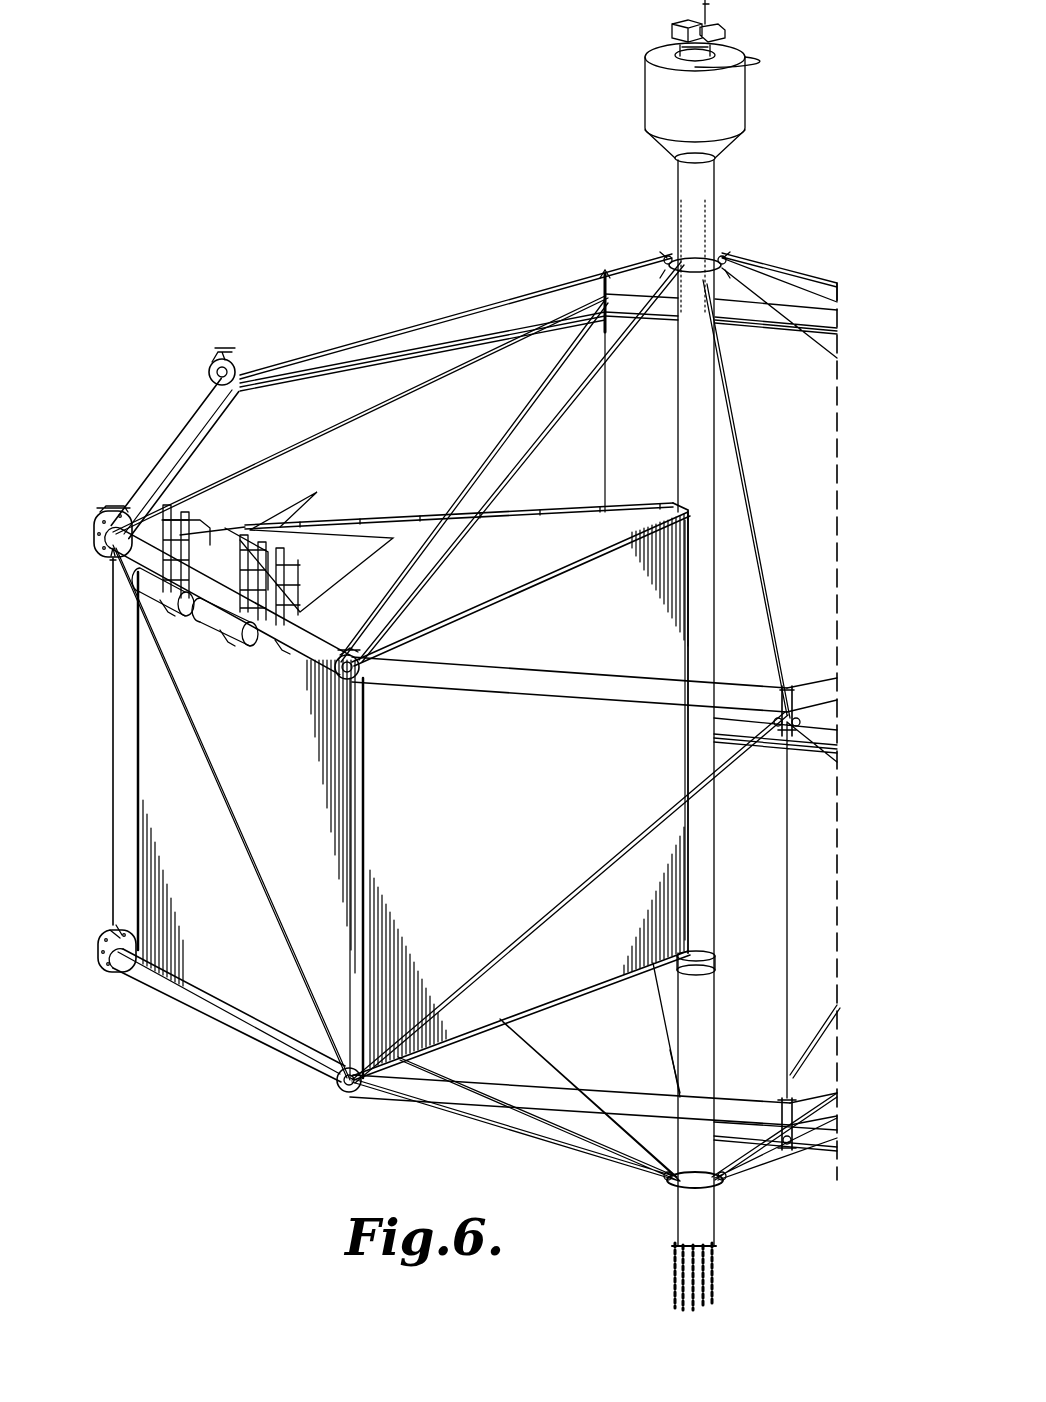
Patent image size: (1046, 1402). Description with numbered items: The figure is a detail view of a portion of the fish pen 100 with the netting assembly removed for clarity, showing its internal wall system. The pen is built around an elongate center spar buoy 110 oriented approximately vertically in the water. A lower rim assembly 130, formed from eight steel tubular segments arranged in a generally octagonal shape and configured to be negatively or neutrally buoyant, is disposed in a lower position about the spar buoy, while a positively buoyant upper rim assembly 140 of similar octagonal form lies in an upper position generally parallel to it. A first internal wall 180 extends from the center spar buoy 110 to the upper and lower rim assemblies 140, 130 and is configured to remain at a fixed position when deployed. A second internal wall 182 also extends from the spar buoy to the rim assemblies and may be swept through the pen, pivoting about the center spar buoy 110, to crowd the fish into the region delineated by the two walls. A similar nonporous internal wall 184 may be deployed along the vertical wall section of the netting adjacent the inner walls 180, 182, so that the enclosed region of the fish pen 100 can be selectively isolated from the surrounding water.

The fish pen 100 is at (272, 283).
The center spar buoy 110 is at (703, 400).
The lower rim assembly 130 is at (215, 1010).
The upper rim assembly 140 is at (160, 442).
The first internal wall 180 is at (632, 530).
The second internal wall 182 is at (418, 525).
The nonporous internal wall 184 is at (155, 778).